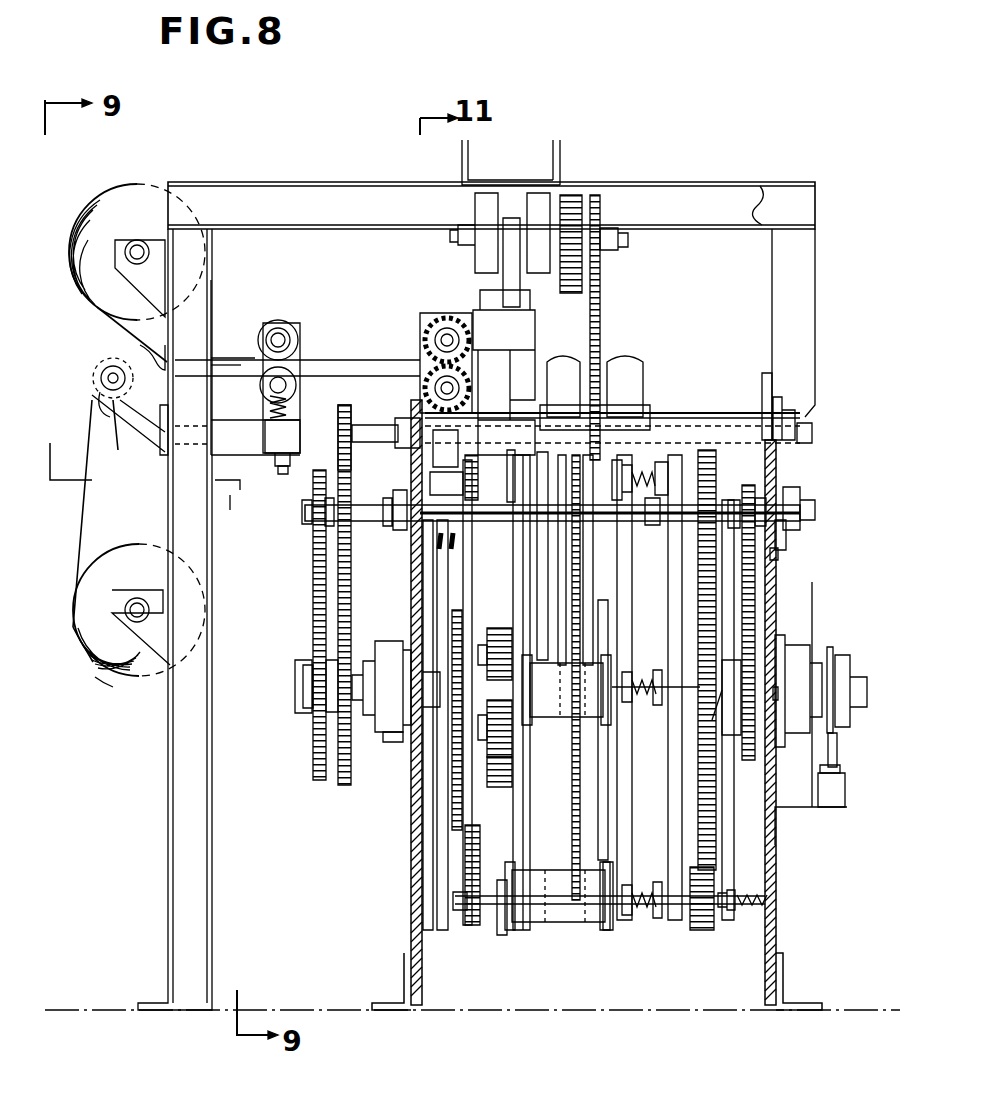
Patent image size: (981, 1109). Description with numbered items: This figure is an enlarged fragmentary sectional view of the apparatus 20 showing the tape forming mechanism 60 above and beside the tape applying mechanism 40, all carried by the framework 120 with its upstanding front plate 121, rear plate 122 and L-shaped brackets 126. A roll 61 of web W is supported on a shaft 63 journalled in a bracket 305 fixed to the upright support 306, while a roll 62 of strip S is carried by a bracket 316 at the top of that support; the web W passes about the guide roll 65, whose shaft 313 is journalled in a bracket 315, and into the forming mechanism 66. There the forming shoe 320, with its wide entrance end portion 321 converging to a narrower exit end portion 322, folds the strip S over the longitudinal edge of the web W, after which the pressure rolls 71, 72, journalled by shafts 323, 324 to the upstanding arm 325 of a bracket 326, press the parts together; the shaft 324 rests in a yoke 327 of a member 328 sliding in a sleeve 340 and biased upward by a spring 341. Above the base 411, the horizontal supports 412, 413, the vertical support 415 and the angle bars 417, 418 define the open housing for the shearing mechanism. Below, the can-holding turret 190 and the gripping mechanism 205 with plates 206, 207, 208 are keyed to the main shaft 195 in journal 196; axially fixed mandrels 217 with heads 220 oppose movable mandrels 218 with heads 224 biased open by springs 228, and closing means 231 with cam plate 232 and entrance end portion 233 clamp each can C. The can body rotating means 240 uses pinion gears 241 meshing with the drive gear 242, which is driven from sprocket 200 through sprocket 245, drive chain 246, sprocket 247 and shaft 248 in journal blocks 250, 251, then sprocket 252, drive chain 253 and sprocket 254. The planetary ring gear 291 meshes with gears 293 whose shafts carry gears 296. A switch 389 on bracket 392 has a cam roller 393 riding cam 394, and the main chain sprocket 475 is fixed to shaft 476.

The apparatus 20 is at (153, 1027).
The tape applying mechanism 40 is at (588, 990).
The tape forming mechanism 60 is at (294, 298).
The roll 61 is at (72, 620).
The roll 62 is at (130, 193).
The shaft 63 is at (95, 667).
The guide roll 65 is at (100, 400).
The forming mechanism 66 is at (232, 330).
The pressure roll 71 is at (300, 322).
The pressure roll 72 is at (381, 418).
The framework 120 is at (275, 182).
The front plate 121 is at (770, 596).
The rear plate 122 is at (411, 864).
The L-shaped bracket 126 is at (398, 981).
The can-holding turret 190 is at (583, 600).
The main shaft 195 is at (347, 735).
The journal 196 is at (393, 745).
The sprocket 200 is at (355, 645).
The gripping mechanism 205 is at (522, 935).
The plate 206 is at (455, 885).
The plate 207 is at (620, 763).
The plate 208 is at (667, 792).
The mandrel 217 is at (498, 508).
The mandrel 218 is at (612, 458).
The head 220 is at (522, 464).
The head 224 is at (595, 492).
The spring 228 is at (648, 512).
The closing means 231 is at (726, 920).
The cam plate 232 is at (745, 862).
The entrance end portion 233 is at (748, 640).
The can body rotating means 240 is at (700, 940).
The pinion gear 241 is at (697, 670).
The drive gear 242 is at (697, 602).
The sprocket 245 is at (298, 720).
The drive chain 246 is at (311, 567).
The sprocket 247 is at (311, 527).
The shaft 248 is at (370, 505).
The journal block 250 is at (426, 564).
The journal block 251 is at (798, 492).
The sprocket 252 is at (785, 529).
The drive chain 253 is at (753, 573).
The sprocket 254 is at (798, 643).
The ring gear 291 is at (458, 637).
The gear 293 is at (453, 608).
The gear 296 is at (502, 792).
The bracket 305 is at (120, 595).
The upright support 306 is at (208, 800).
The shaft 313 is at (98, 374).
The bracket 315 is at (118, 427).
The bracket 316 is at (115, 256).
The forming shoe 320 is at (230, 385).
The entrance end portion 321 is at (142, 350).
The exit end portion 322 is at (255, 332).
The shaft 323 is at (290, 337).
The shaft 324 is at (284, 362).
The upstanding arm 325 is at (328, 424).
The bracket 326 is at (300, 500).
The yoke 327 is at (268, 402).
The member 328 is at (273, 467).
The sleeve 340 is at (268, 429).
The spring 341 is at (288, 470).
The switch 389 is at (845, 793).
The bracket 392 is at (818, 833).
The cam roller 393 is at (825, 738).
The cam 394 is at (833, 660).
The base 411 is at (670, 415).
The horizontal support 412 is at (744, 207).
The horizontal support 413 is at (308, 214).
The vertical support 415 is at (795, 310).
The angle bar 417 is at (480, 173).
The angle bar 418 is at (565, 173).
The sprocket 475 is at (350, 450).
The shaft 476 is at (812, 437).
The strip S is at (109, 322).
The web W is at (85, 497).
The can C is at (562, 688).